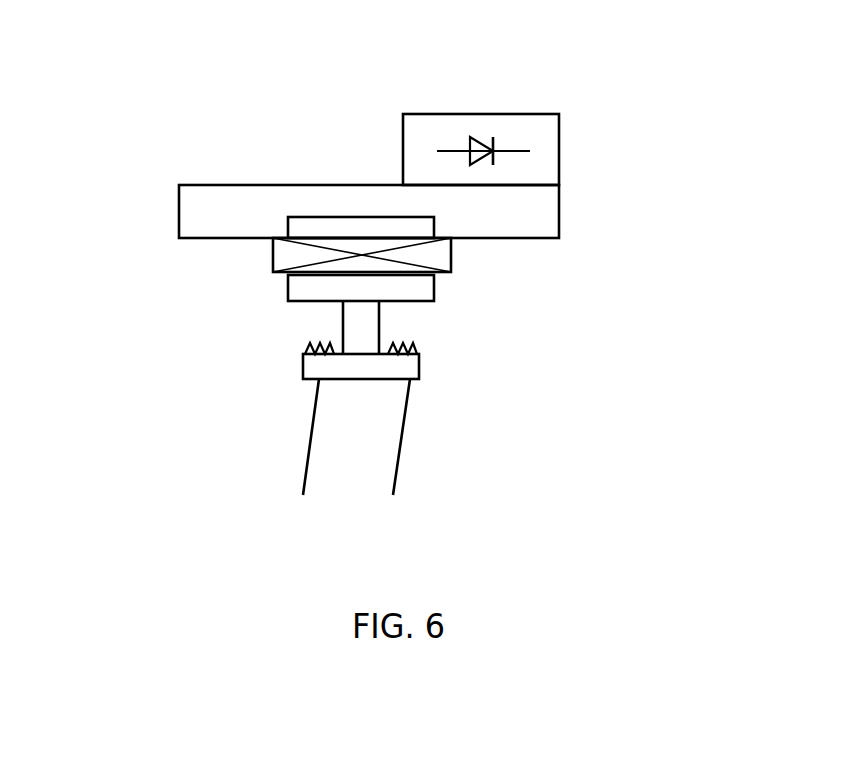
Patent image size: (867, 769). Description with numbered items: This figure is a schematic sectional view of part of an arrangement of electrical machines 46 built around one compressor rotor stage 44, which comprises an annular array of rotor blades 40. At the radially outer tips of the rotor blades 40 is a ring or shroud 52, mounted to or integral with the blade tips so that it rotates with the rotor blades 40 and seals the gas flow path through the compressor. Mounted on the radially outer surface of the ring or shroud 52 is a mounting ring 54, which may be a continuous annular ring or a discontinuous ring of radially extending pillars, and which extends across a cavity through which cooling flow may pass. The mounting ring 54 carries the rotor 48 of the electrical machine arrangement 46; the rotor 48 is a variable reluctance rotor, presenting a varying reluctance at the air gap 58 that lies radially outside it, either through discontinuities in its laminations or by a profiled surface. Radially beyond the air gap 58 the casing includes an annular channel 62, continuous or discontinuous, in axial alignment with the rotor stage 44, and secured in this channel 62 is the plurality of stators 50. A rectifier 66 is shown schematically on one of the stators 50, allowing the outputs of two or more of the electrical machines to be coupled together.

The arrangement of electrical machines 46 is at (183, 53).
The annular channel 62 is at (234, 193).
The rectifier 66 is at (527, 128).
The stator 50 is at (142, 258).
The air gap 58 is at (450, 280).
The rotor 48 is at (295, 285).
The mounting ring 54 is at (367, 319).
The ring or shroud 52 is at (388, 357).
The rotor blade 40 is at (356, 437).
The rotor stage 44 is at (359, 487).